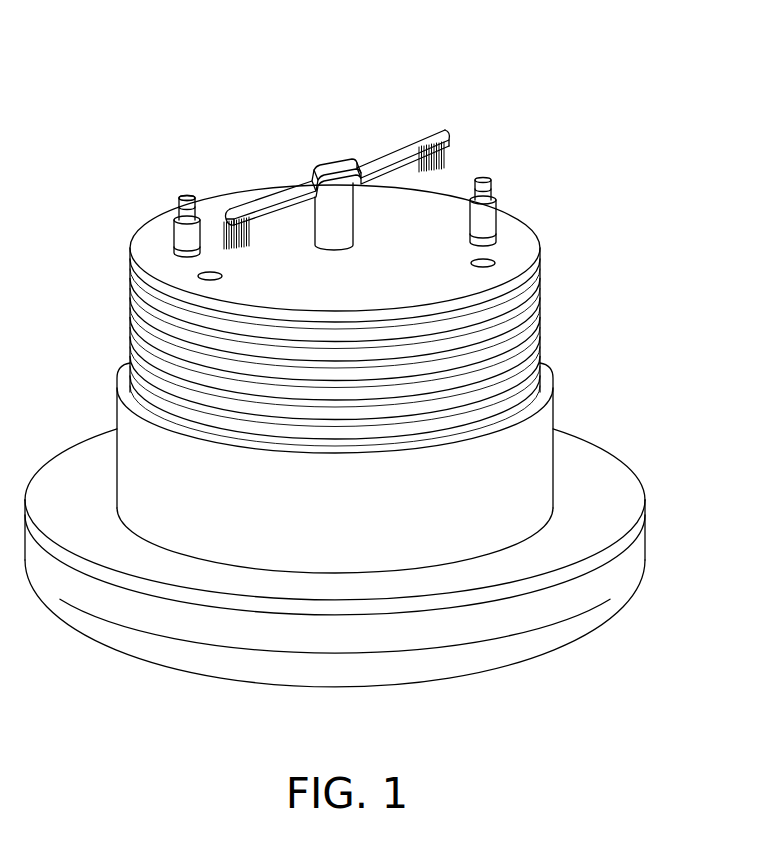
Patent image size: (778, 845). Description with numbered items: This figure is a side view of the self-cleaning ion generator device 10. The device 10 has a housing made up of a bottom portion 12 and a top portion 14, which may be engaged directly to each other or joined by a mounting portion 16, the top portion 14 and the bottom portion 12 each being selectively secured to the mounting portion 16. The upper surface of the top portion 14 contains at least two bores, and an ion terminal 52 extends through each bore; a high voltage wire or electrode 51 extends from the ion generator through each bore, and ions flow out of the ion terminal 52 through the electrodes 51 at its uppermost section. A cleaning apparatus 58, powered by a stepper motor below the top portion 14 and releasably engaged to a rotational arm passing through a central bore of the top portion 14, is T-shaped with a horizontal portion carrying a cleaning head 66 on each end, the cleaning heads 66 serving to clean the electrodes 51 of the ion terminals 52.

The self-cleaning ion generator device 10 is at (396, 75).
The bottom portion 12 is at (547, 642).
The top portion 14 is at (520, 335).
The mounting portion 16 is at (535, 472).
The high voltage wire or electrode 51 is at (188, 195).
The ion terminal 52 is at (178, 212).
The cleaning apparatus 58 is at (332, 178).
The cleaning head 66 is at (224, 232).